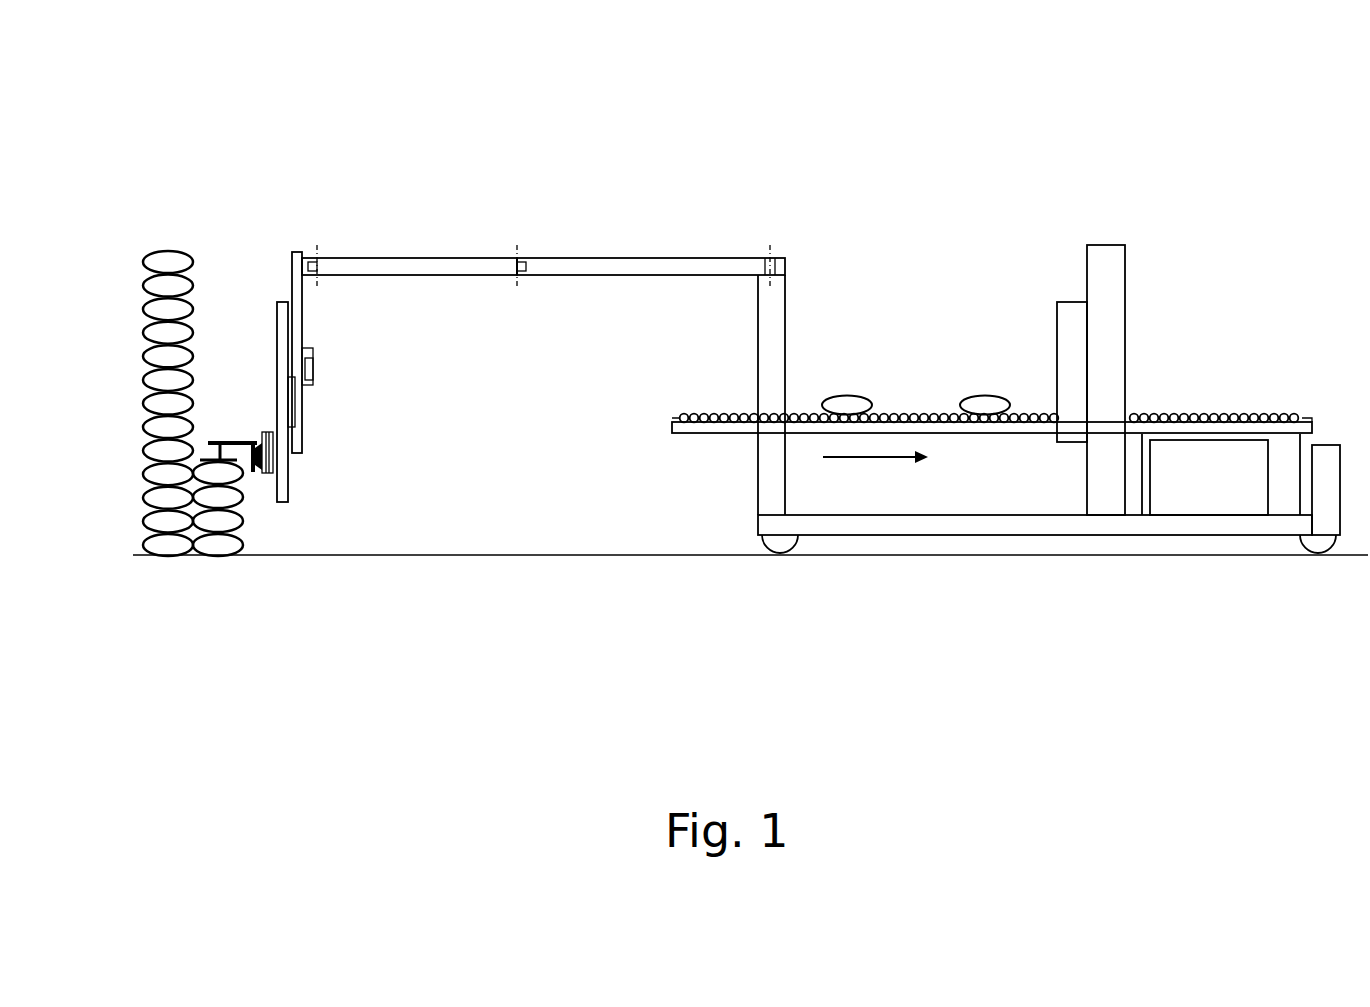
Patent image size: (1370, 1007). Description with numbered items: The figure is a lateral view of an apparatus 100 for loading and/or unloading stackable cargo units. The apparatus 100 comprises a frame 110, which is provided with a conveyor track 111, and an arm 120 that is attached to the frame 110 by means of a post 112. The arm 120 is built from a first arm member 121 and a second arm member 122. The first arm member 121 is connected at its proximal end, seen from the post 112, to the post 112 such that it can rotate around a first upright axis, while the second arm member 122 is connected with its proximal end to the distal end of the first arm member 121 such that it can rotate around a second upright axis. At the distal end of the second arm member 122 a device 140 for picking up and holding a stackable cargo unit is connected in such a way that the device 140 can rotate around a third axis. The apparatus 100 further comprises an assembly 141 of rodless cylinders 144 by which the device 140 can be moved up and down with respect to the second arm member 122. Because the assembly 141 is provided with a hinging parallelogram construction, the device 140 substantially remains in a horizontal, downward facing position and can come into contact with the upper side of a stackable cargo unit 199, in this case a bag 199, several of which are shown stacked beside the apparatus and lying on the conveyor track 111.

The apparatus 100 is at (845, 92).
The frame 110 is at (962, 527).
The conveyor track 111 is at (712, 424).
The post 112 is at (772, 332).
The arm 120 is at (602, 334).
The first arm member 121 is at (672, 268).
The second arm member 122 is at (367, 268).
The device for picking up and holding a stackable cargo unit 140 is at (218, 422).
The assembly of rodless cylinders 141 is at (322, 450).
The rodless cylinder 144 is at (297, 292).
The stackable cargo unit 199 is at (222, 474).